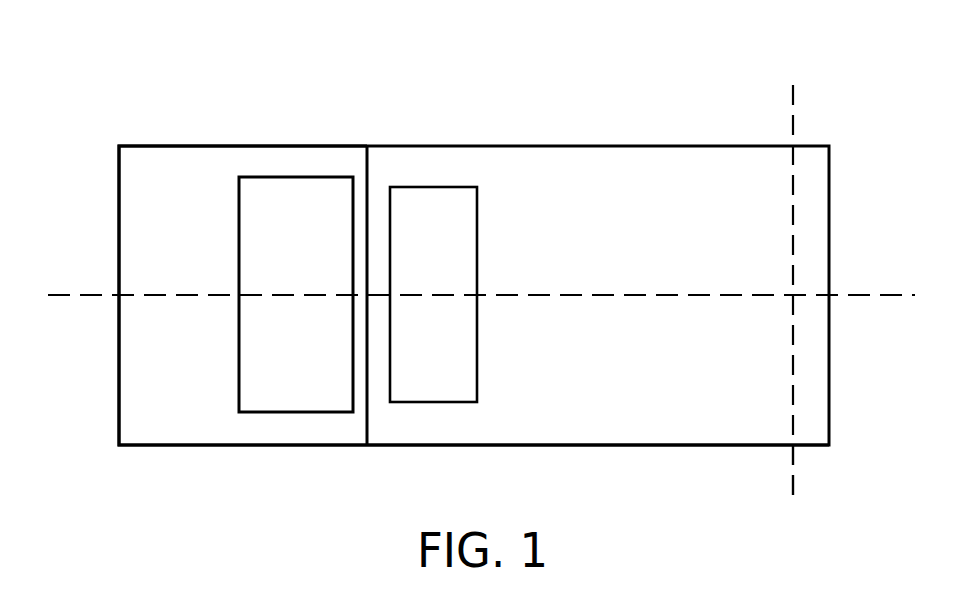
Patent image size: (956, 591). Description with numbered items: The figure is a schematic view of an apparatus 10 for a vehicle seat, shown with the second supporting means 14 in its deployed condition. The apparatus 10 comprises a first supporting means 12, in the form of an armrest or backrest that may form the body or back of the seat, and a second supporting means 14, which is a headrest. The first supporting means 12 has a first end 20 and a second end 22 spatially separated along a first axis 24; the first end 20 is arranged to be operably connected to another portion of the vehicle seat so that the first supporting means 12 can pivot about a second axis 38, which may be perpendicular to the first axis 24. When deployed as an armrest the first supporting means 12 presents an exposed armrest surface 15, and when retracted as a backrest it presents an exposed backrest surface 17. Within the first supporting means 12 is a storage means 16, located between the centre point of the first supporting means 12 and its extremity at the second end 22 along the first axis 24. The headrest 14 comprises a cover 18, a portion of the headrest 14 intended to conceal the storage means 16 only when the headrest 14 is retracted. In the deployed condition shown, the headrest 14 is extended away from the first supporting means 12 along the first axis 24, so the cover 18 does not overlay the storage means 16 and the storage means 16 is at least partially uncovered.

The apparatus 10 is at (543, 106).
The first supporting means 12 is at (731, 390).
The second supporting means 14 is at (152, 216).
The exposed armrest surface 15 is at (686, 220).
The storage means 16 is at (462, 378).
The exposed backrest surface 17 is at (724, 445).
The cover 18 is at (239, 345).
The first end 20 is at (807, 196).
The second end 22 is at (389, 160).
The first axis 24 is at (867, 294).
The second axis 38 is at (793, 470).